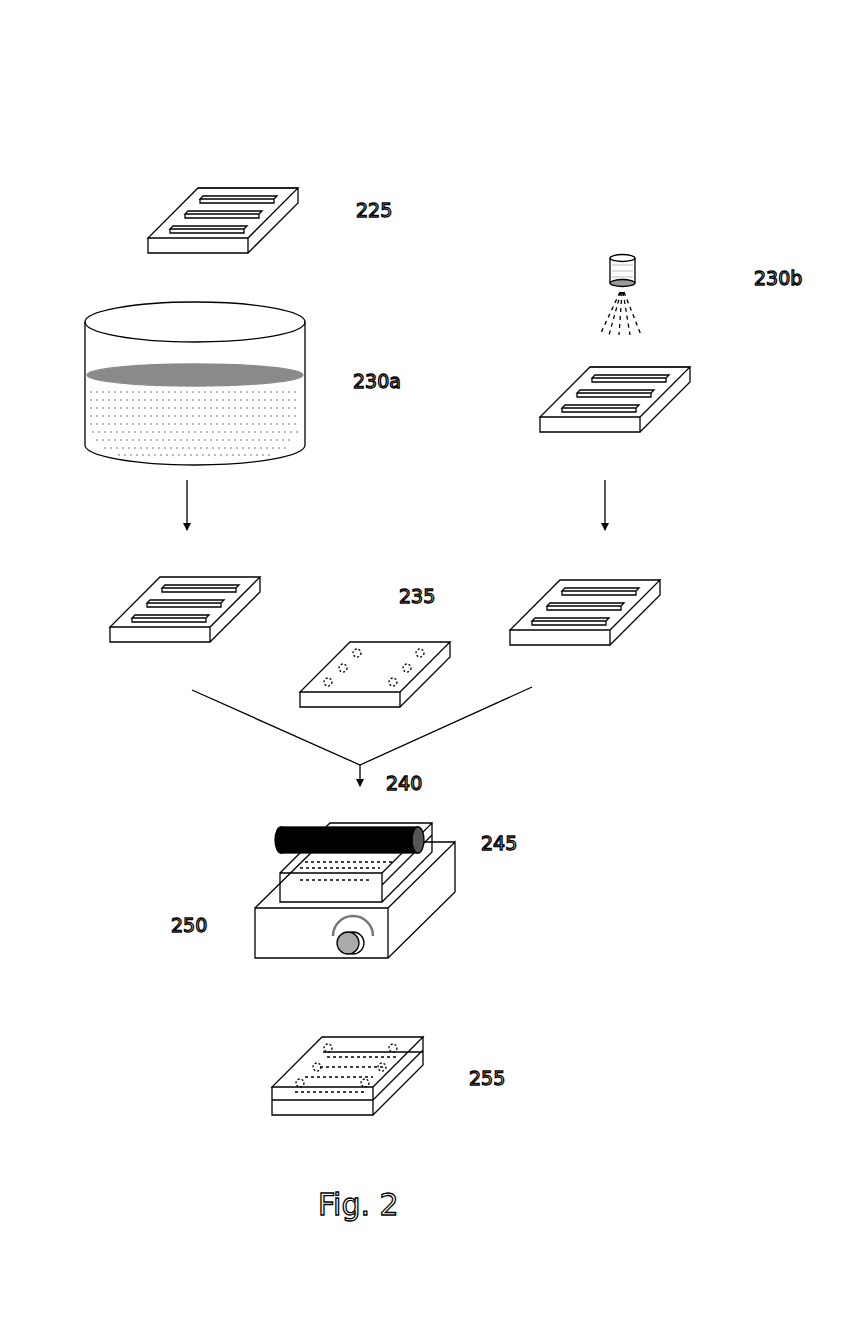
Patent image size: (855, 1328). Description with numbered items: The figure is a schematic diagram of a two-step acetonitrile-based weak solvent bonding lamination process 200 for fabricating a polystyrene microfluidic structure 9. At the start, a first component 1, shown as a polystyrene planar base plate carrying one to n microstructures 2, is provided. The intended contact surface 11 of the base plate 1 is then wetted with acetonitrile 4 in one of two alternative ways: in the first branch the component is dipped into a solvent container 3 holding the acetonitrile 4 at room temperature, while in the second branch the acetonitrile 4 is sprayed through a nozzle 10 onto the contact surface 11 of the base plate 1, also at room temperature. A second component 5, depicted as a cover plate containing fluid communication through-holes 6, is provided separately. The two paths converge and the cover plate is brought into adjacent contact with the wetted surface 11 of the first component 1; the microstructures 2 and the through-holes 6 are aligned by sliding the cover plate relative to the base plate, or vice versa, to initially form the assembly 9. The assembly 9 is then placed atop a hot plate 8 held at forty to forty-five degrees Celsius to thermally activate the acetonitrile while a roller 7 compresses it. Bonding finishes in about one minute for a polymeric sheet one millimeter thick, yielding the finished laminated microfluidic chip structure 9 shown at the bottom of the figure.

The lamination process 200 is at (670, 58).
The first component 1 is at (163, 202).
The microstructures 2 is at (280, 192).
The solvent container 3 is at (85, 315).
The acetonitrile 4 is at (95, 413).
The second component 5 is at (350, 632).
The through-holes 6 is at (327, 680).
The roller 7 is at (275, 827).
The hot plate 8 is at (443, 882).
The microfluidic structure 9 is at (435, 830).
The nozzle 10 is at (605, 247).
The intended contact surface 11 is at (257, 225).